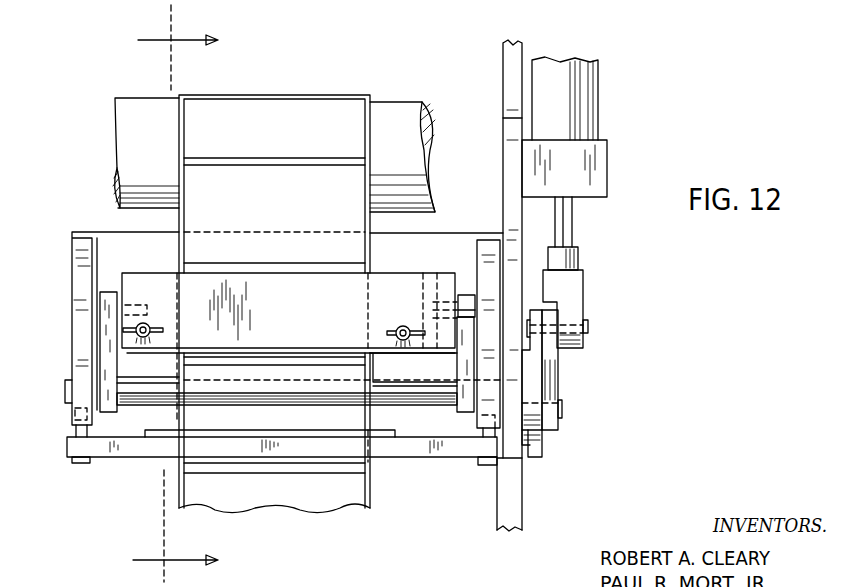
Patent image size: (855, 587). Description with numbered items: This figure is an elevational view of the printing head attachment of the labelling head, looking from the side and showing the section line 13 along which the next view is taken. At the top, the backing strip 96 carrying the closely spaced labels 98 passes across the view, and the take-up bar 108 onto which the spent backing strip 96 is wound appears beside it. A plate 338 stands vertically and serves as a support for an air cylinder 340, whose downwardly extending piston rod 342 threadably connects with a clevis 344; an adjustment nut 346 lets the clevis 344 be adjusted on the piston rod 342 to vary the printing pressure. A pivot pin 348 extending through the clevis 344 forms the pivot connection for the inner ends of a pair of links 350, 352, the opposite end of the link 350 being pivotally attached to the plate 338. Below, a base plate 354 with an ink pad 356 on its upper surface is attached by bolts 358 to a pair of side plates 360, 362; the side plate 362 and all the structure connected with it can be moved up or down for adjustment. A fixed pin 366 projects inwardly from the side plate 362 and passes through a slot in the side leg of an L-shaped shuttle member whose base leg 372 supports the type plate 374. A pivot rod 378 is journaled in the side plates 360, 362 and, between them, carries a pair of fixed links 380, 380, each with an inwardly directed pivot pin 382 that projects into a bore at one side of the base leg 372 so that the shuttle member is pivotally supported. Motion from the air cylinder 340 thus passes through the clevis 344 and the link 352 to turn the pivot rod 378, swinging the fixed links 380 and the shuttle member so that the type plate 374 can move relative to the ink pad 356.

The section line 13- 13 is at (175, 296).
The backing strip 96 is at (370, 162).
The labels 98 is at (287, 112).
The take-up bar 108 is at (127, 123).
The plate 338 is at (508, 130).
The air cylinder 340 is at (587, 102).
The piston rod 342 is at (572, 223).
The clevis 344 is at (572, 292).
The adjustment nut 346 is at (578, 263).
The pivot pin 348 is at (588, 328).
The link 350 is at (535, 357).
The link 352 is at (550, 385).
The base plate 354 is at (407, 450).
The ink pad 356 is at (313, 433).
The bolts 358 is at (78, 463).
The side plate 360 is at (80, 303).
The side plate 362 is at (487, 240).
The fixed pin 366 is at (463, 310).
The base leg 372 is at (294, 306).
The type plate 374 is at (376, 356).
The pivot rod 378 is at (395, 395).
The fixed links 380 is at (107, 352).
The pivot pin 382 is at (147, 305).